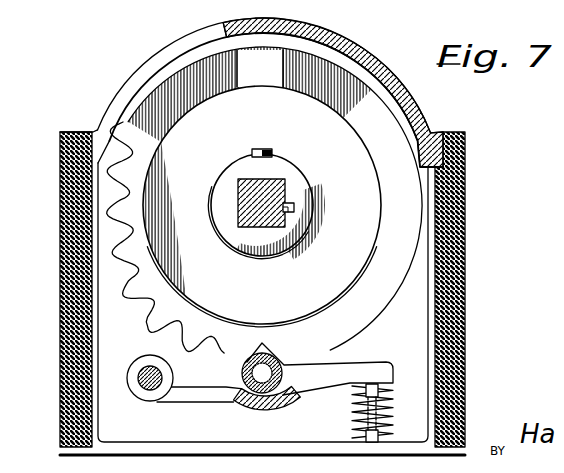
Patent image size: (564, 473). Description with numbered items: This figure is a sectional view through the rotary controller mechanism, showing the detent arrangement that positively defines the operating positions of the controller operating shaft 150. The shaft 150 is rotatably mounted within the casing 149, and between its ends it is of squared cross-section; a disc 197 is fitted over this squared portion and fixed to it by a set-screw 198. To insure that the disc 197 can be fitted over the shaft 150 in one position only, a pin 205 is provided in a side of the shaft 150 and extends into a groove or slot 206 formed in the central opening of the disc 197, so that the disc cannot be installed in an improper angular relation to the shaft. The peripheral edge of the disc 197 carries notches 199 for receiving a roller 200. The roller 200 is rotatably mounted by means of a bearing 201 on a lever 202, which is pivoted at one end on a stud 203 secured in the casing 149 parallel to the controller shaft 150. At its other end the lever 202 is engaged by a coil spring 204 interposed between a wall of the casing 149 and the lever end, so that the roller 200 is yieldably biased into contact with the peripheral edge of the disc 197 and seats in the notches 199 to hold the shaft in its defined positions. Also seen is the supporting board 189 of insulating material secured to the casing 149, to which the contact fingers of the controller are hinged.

The casing 149 is at (412, 110).
The supporting board 189 is at (62, 267).
The disc 197 is at (363, 312).
The controller operating shaft 150 is at (243, 220).
The pin 205 is at (282, 216).
The groove or slot 206 is at (288, 207).
The set-screw 198 is at (258, 150).
The notches 199 is at (157, 325).
The roller 200 is at (244, 372).
The bearing 201 is at (283, 370).
The lever 202 is at (205, 401).
The stud 203 is at (150, 392).
The coil spring 204 is at (352, 418).